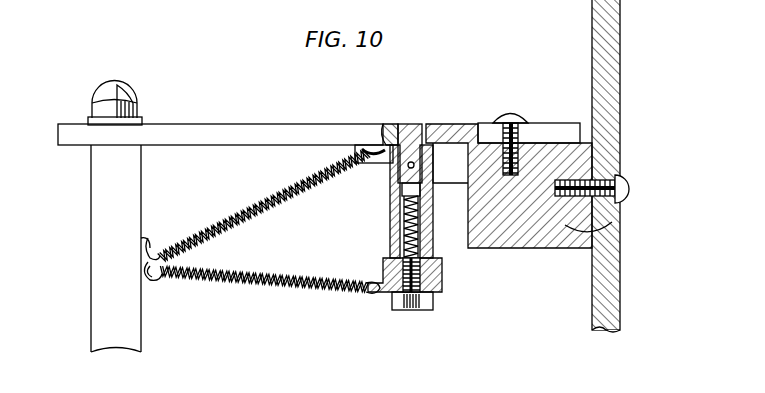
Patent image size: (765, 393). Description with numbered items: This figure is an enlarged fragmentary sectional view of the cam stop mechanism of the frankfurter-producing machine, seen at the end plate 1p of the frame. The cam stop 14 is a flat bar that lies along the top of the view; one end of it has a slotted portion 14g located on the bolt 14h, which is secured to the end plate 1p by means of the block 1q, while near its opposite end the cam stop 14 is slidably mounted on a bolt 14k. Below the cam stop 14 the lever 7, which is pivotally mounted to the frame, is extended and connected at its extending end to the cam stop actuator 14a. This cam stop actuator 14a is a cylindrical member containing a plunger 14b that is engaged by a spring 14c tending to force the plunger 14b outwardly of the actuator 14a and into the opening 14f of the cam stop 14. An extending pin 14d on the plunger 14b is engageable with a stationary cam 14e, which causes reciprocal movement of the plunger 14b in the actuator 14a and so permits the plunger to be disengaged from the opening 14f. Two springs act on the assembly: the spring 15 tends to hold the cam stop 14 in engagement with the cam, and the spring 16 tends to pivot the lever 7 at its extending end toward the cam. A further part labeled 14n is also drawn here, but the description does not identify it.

The end plate 1p is at (602, 78).
The block 1q is at (626, 200).
The lever 7 is at (382, 264).
The cam stop 14 is at (252, 128).
The cam stop actuator 14a is at (436, 240).
The plunger 14b is at (440, 277).
The spring 14c is at (397, 204).
The extending pin 14d is at (434, 130).
The stationary cam 14e is at (446, 186).
The opening 14f is at (387, 130).
The slotted portion 14g is at (548, 130).
The bolt 14h is at (518, 176).
The bolt 14k is at (130, 96).
The pin 14n is at (410, 128).
The spring 15 is at (232, 203).
The spring 16 is at (245, 290).